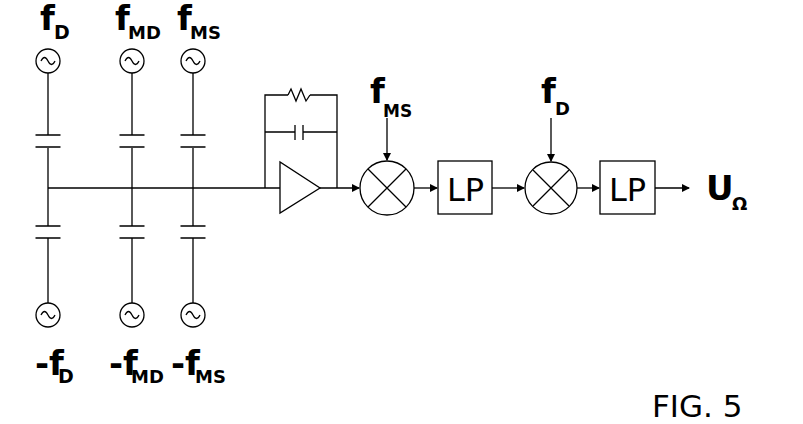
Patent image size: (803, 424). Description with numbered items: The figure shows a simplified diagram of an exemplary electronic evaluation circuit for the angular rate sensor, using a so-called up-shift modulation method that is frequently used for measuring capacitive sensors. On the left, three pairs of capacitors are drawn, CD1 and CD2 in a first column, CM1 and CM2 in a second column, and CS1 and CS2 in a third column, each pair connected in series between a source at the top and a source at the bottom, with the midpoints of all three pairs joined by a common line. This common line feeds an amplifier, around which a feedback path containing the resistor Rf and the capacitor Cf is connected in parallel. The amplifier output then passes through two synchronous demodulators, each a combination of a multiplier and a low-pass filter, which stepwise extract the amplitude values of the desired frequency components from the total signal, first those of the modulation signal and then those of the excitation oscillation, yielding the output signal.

The drive capacitor 1 CD1 is at (60, 118).
The drive capacitor 2 CD2 is at (60, 257).
The measurement capacitor 1 CM1 is at (145, 118).
The measurement capacitor 2 CM2 is at (145, 257).
The sense capacitor 1 CS1 is at (205, 118).
The sense capacitor 2 CS2 is at (205, 257).
The feedback resistor Rf is at (302, 107).
The feedback capacitor Cf is at (301, 145).